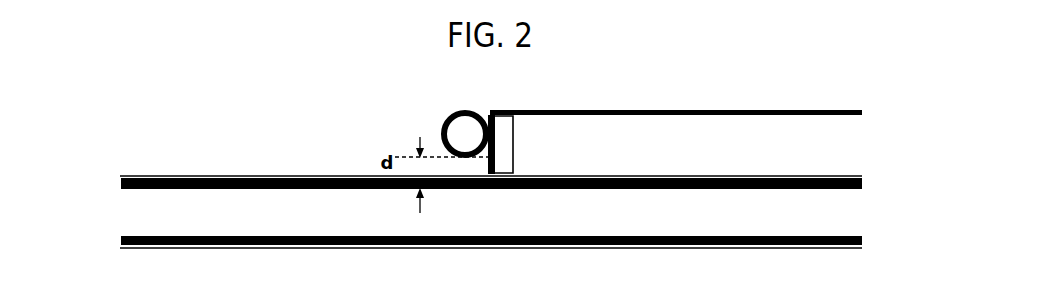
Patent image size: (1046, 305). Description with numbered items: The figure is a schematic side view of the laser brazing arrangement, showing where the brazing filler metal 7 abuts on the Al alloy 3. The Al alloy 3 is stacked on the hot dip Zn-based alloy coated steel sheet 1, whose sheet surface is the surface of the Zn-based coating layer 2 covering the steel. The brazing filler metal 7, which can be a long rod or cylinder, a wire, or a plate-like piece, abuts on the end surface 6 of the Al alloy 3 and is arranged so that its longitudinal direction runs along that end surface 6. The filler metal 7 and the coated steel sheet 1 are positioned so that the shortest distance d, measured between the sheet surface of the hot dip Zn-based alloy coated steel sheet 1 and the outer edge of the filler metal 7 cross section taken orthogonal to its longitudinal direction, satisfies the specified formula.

The hot dip Zn-based alloy coated steel sheet 1 is at (835, 213).
The Zn-based coating layer 2 is at (117, 178).
The Al alloy 3 is at (850, 128).
The end surface of Al alloy 6 is at (515, 143).
The brazing filler metal 7 is at (468, 131).